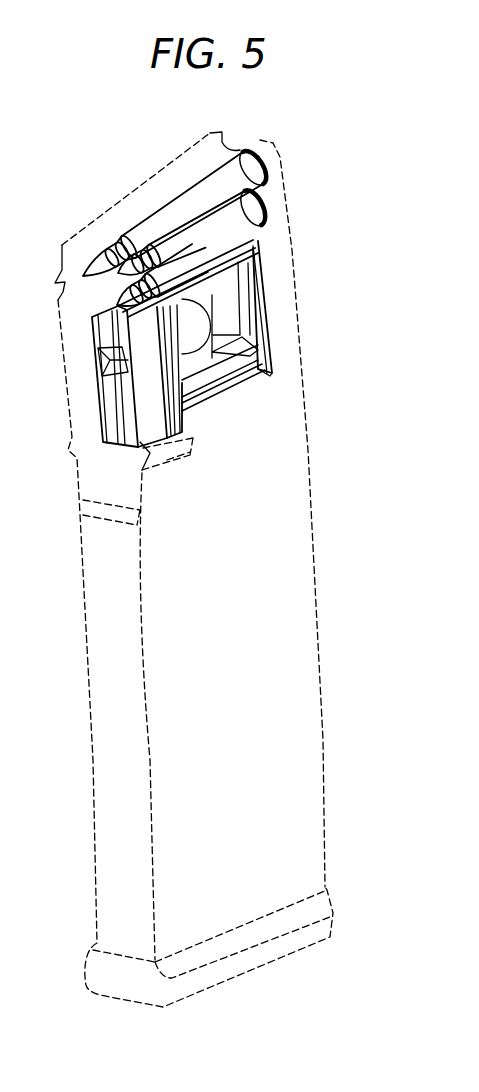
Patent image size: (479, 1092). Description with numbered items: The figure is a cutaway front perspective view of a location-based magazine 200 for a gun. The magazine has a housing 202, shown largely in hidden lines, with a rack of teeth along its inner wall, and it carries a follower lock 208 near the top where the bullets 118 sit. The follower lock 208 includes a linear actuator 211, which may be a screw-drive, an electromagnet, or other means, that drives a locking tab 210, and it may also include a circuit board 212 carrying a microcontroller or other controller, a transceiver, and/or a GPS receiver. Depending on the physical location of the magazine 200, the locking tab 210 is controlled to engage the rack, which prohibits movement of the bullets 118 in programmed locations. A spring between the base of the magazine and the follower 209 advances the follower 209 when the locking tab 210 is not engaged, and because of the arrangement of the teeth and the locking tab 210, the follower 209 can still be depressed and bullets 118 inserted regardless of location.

The bullets 118 is at (203, 208).
The location-based magazine 200 is at (325, 135).
The housing 202 is at (88, 653).
The follower lock 208 is at (325, 225).
The follower 209 is at (260, 280).
The locking tab 210 is at (110, 360).
The linear actuator 211 is at (182, 328).
The circuit board 212 is at (277, 358).